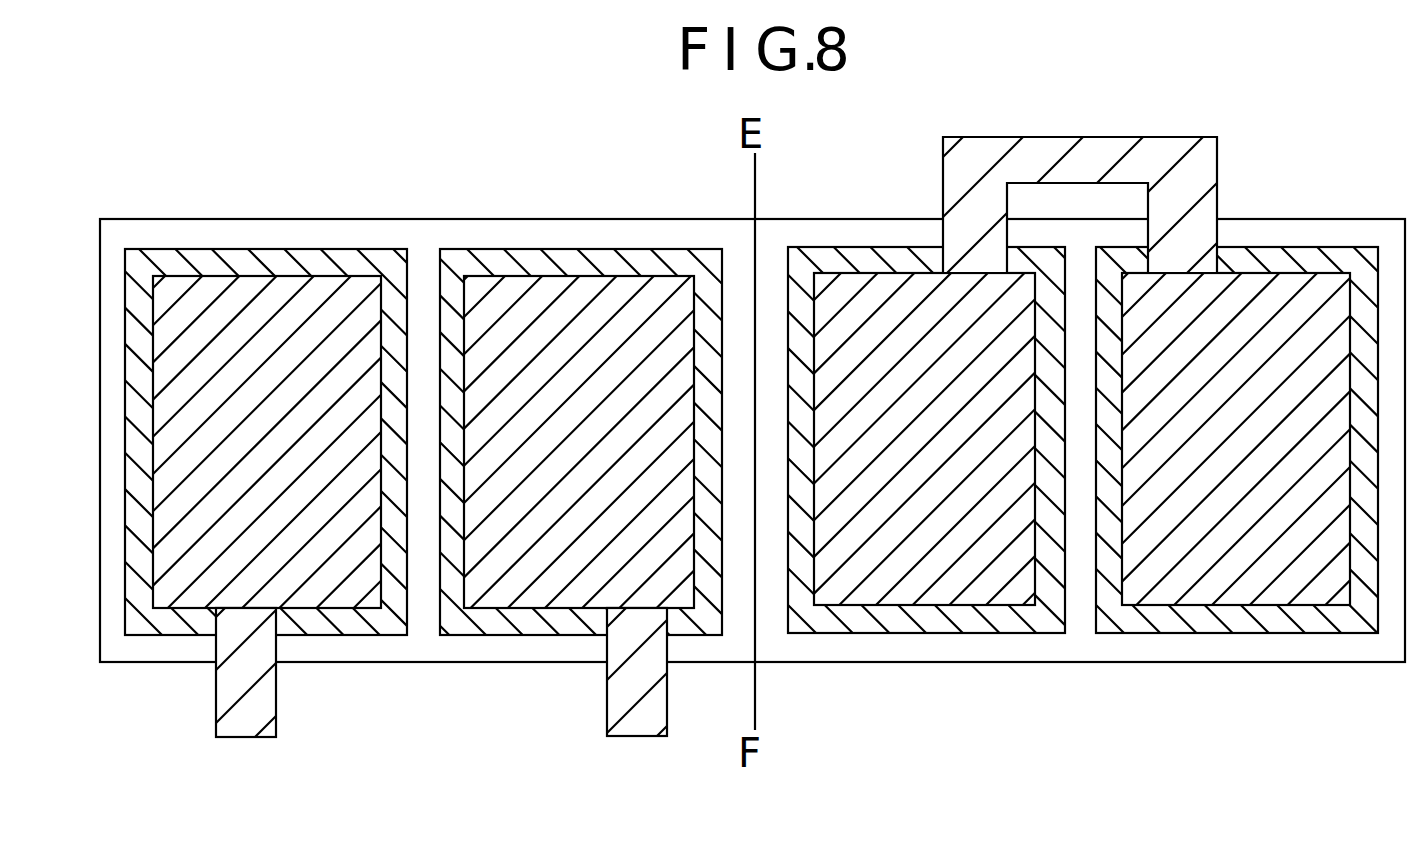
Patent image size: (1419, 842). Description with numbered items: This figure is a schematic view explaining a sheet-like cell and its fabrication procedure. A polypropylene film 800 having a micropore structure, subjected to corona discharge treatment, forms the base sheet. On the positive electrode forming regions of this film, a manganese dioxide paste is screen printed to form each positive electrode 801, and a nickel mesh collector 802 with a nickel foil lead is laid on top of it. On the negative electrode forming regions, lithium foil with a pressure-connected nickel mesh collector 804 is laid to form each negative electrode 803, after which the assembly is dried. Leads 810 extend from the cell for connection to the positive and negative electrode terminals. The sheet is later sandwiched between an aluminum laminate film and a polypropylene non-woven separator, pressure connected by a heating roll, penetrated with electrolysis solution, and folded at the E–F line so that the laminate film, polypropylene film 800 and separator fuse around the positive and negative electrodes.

The polypropylene film 800 is at (142, 652).
The positive electrode 801 is at (372, 637).
The collector 802 is at (320, 595).
The negative electrode 803 is at (568, 623).
The collector 804 is at (518, 588).
The lead 810 is at (252, 728).